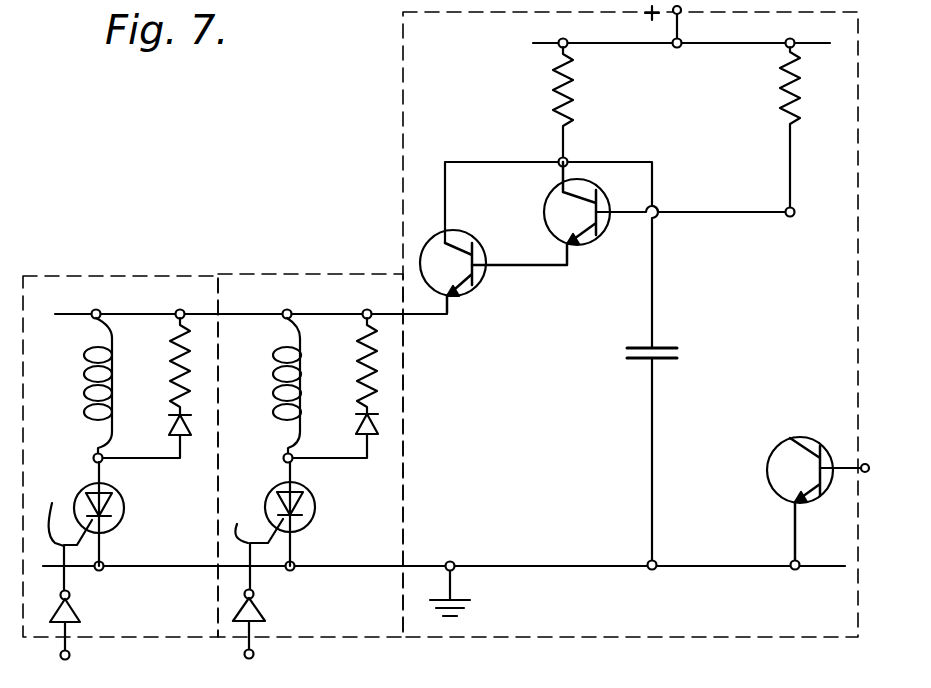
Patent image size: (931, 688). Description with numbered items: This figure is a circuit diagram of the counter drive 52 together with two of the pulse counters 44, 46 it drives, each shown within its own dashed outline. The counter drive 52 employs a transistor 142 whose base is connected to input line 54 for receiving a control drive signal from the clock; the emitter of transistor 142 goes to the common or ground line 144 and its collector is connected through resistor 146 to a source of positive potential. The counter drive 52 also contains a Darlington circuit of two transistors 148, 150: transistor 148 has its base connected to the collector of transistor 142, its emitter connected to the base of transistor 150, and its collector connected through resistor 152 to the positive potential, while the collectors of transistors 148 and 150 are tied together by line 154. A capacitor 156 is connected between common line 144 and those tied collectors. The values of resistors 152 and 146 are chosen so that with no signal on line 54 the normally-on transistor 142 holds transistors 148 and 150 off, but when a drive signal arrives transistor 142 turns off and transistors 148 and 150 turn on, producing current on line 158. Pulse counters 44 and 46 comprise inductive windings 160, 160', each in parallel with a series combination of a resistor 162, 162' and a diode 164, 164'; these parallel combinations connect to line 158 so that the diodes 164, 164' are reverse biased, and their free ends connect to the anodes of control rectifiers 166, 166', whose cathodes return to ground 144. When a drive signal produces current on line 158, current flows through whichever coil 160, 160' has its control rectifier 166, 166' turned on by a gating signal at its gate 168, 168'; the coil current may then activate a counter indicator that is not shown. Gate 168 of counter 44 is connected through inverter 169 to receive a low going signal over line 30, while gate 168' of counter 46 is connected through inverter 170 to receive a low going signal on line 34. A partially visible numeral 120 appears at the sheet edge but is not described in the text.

The resistor 152 is at (578, 95).
The resistor 146 is at (776, 82).
The line 154 is at (508, 160).
The transistor 148 is at (604, 240).
The transistor 150 is at (478, 287).
The capacitor 156 is at (678, 352).
The transistor 142 is at (770, 486).
The input line 54 is at (846, 462).
The common or ground line 144 is at (612, 562).
The line 158 is at (337, 311).
The inductive winding 160 is at (261, 388).
The resistor 162 is at (341, 366).
The diode 164 is at (331, 438).
The control rectifier 166 is at (315, 527).
The control rectifier gate 168 is at (246, 515).
The inverter 169 is at (266, 610).
The line 30 is at (254, 642).
The inductive winding 160' is at (71, 388).
The resistor 162' is at (154, 366).
The diode 164' is at (143, 439).
The control rectifier 166' is at (125, 527).
The control rectifier gate 168' is at (53, 507).
The inverter 170 is at (82, 612).
The line 34 is at (70, 652).
The pulse counter 46 is at (197, 632).
The pulse counter 44 is at (388, 632).
The counter drive 52 is at (824, 622).
The circuit 120 is at (796, 680).